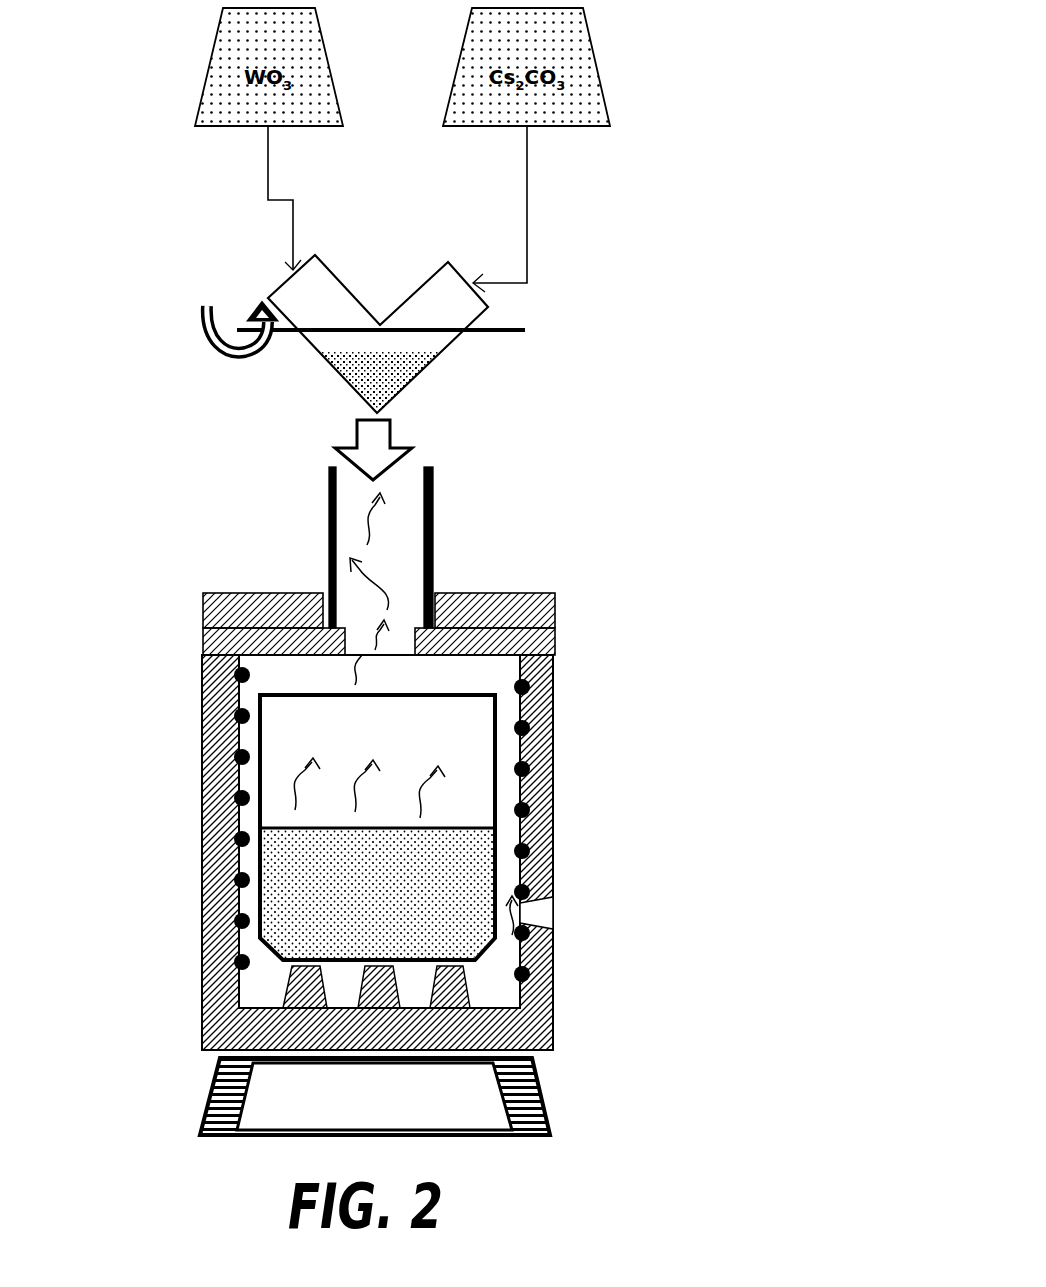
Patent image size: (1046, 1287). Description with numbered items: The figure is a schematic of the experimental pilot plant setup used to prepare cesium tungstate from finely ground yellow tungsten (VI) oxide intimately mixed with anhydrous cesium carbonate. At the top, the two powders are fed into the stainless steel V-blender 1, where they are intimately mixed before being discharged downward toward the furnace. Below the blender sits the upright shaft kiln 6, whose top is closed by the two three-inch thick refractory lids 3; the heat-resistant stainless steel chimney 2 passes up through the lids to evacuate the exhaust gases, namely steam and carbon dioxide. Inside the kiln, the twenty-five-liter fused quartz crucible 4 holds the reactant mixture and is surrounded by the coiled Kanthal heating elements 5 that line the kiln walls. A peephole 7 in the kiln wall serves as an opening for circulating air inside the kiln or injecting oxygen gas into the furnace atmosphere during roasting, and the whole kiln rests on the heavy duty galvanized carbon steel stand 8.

The V-blender 1 is at (447, 352).
The chimney 2 is at (433, 547).
The refractory lids 3 is at (555, 608).
The fused quartz crucible 4 is at (493, 779).
The heating elements 5 is at (523, 770).
The shaft kiln 6 is at (555, 853).
The peephole 7 is at (553, 913).
The stand 8 is at (545, 1100).